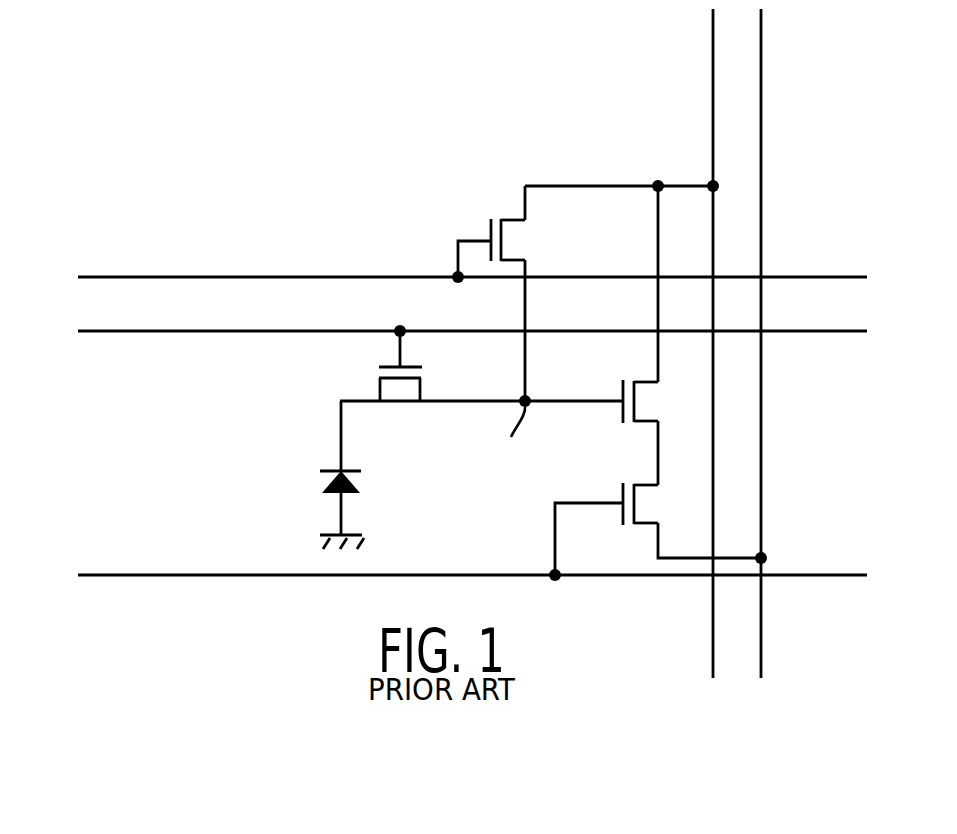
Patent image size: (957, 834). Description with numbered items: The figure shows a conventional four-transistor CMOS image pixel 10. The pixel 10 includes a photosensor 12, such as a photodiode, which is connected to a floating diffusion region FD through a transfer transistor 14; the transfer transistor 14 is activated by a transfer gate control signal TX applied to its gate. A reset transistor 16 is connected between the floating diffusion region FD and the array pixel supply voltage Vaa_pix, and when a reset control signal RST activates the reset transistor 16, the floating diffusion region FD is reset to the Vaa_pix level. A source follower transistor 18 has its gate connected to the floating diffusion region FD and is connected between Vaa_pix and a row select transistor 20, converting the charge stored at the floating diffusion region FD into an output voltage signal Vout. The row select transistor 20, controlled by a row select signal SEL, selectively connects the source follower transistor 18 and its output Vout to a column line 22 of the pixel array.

The CMOS image pixel 10 is at (228, 112).
The photosensor 12 is at (356, 484).
The transfer transistor 14 is at (378, 388).
The reset transistor 16 is at (516, 216).
The source follower transistor 18 is at (640, 385).
The row select transistor 20 is at (640, 488).
The column line 22 is at (762, 598).